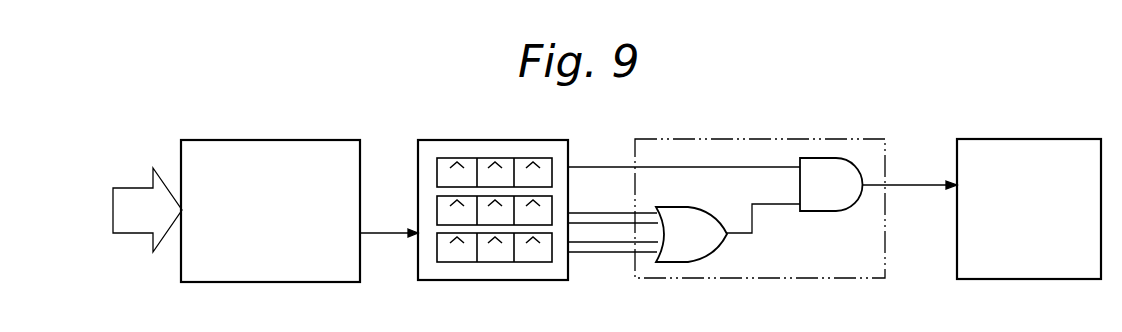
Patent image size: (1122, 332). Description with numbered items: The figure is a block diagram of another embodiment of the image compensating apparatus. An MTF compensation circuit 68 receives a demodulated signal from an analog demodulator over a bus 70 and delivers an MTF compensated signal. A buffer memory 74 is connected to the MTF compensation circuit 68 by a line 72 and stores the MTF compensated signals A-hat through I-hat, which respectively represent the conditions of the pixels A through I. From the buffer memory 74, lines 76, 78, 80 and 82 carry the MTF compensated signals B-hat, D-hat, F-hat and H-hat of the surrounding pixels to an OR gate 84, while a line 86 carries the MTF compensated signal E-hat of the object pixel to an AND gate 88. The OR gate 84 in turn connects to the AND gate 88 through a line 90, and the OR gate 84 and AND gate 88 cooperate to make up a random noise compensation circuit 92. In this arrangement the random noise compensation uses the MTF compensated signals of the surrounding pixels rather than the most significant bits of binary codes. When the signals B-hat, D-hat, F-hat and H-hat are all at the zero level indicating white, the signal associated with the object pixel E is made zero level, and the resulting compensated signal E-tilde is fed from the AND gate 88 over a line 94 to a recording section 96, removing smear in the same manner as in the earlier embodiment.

The MTF compensation circuit 68 is at (254, 140).
The bus 70 is at (131, 188).
The line 72 is at (389, 233).
The buffer memory 74 is at (460, 140).
The line 76 is at (584, 213).
The line 78 is at (621, 223).
The line 80 is at (622, 242).
The line 82 is at (582, 253).
The OR gate 84 is at (685, 263).
The line 86 is at (596, 167).
The AND gate 88 is at (837, 212).
The line 90 is at (753, 217).
The random noise compensation circuit 92 is at (779, 139).
The line 94 is at (919, 186).
The recording section 96 is at (1033, 139).